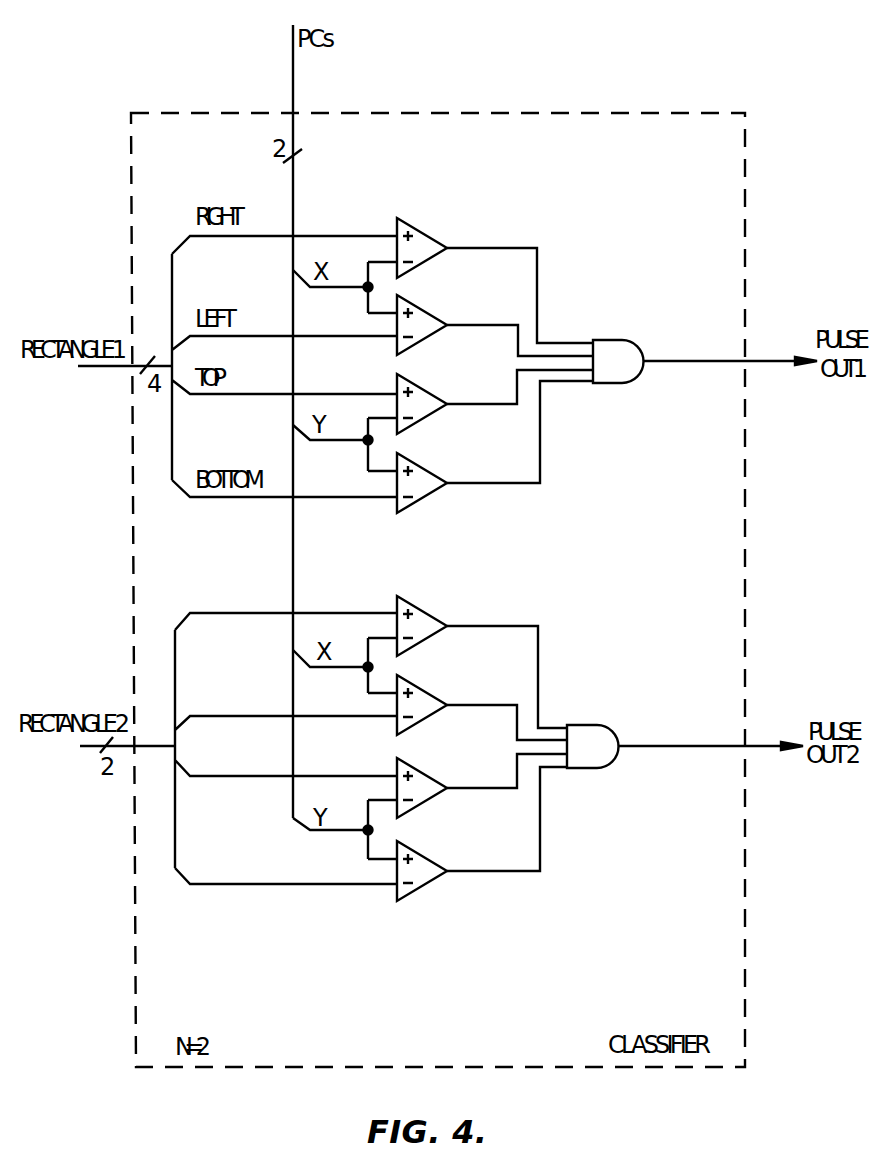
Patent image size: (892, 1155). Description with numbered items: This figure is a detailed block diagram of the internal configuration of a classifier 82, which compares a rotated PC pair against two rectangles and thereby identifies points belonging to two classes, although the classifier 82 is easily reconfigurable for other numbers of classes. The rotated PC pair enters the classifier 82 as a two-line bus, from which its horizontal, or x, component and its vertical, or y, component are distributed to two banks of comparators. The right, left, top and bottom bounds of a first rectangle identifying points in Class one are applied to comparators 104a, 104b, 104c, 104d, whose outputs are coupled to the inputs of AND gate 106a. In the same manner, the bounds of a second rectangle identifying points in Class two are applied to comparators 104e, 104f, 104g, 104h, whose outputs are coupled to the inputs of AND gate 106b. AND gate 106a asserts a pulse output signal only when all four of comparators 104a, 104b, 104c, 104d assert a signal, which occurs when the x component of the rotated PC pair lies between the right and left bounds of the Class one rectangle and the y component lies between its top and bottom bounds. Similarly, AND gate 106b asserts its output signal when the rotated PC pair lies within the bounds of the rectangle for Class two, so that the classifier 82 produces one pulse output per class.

The classifier 82 is at (560, 113).
The comparator 104a is at (425, 235).
The comparator 104b is at (426, 313).
The comparator 104c is at (422, 392).
The comparator 104d is at (424, 471).
The comparator 104e is at (426, 613).
The comparator 104f is at (427, 694).
The comparator 104g is at (427, 777).
The comparator 104h is at (430, 861).
The AND gate 106a is at (630, 341).
The AND gate 106b is at (606, 726).